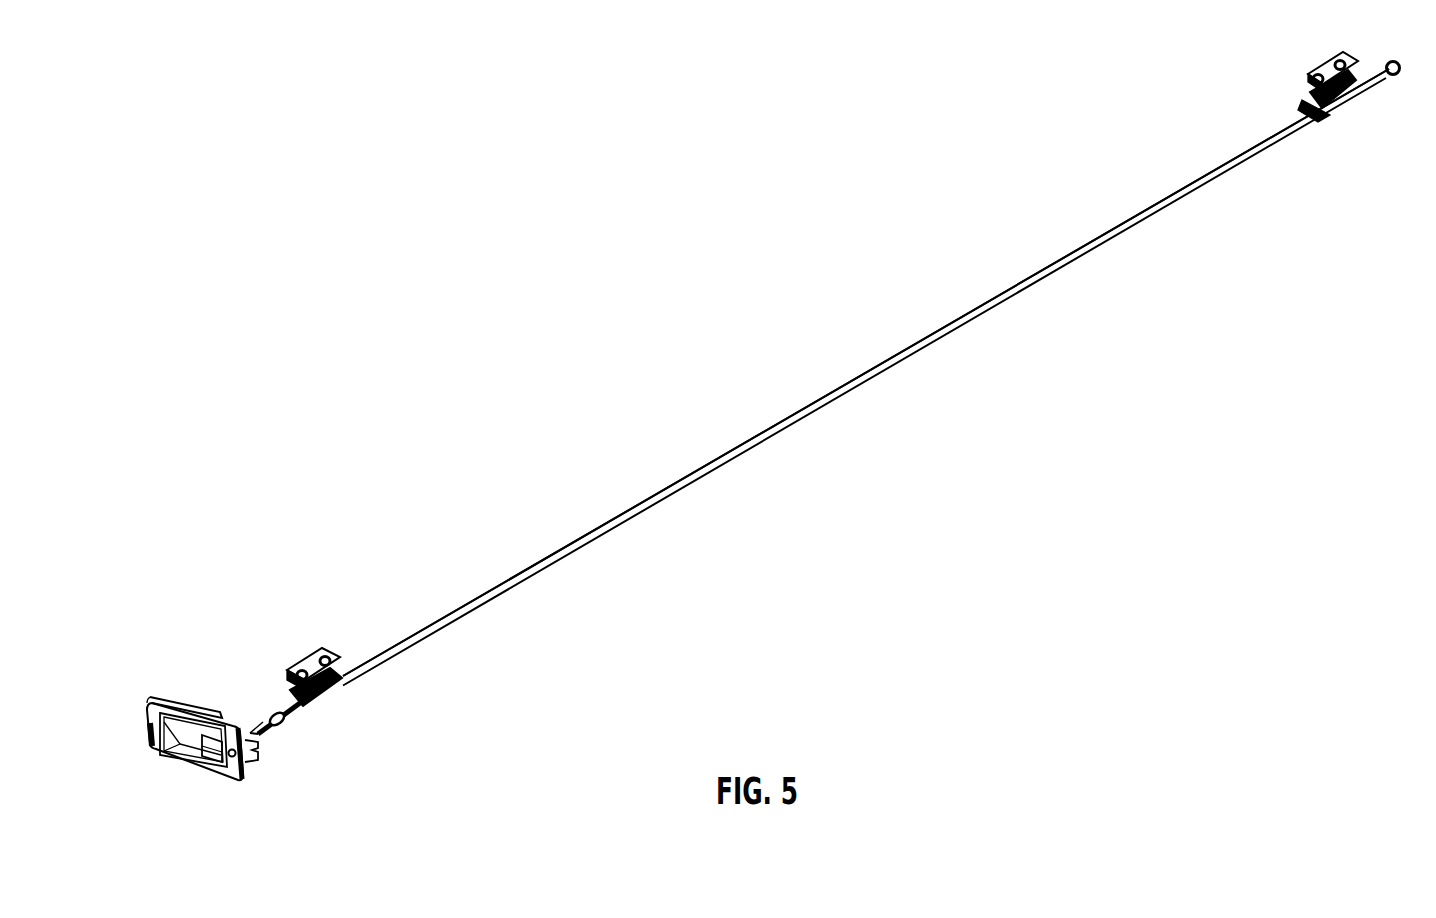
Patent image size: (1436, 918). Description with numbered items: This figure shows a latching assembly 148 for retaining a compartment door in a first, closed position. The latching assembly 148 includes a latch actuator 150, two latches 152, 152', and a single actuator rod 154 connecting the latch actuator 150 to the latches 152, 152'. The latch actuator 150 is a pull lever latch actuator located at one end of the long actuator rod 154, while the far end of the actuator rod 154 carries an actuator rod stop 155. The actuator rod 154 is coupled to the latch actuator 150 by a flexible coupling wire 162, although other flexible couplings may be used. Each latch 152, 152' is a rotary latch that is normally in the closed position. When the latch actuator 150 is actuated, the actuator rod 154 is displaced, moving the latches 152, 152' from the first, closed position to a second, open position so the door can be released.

The latching assembly 148 is at (315, 546).
The latch actuator 150 is at (152, 700).
The latch 152 is at (289, 669).
The latch 152' is at (1303, 81).
The actuator rod 154 is at (748, 440).
The actuator rod stop 155 is at (1397, 80).
The flexible coupling wire 162 is at (276, 731).